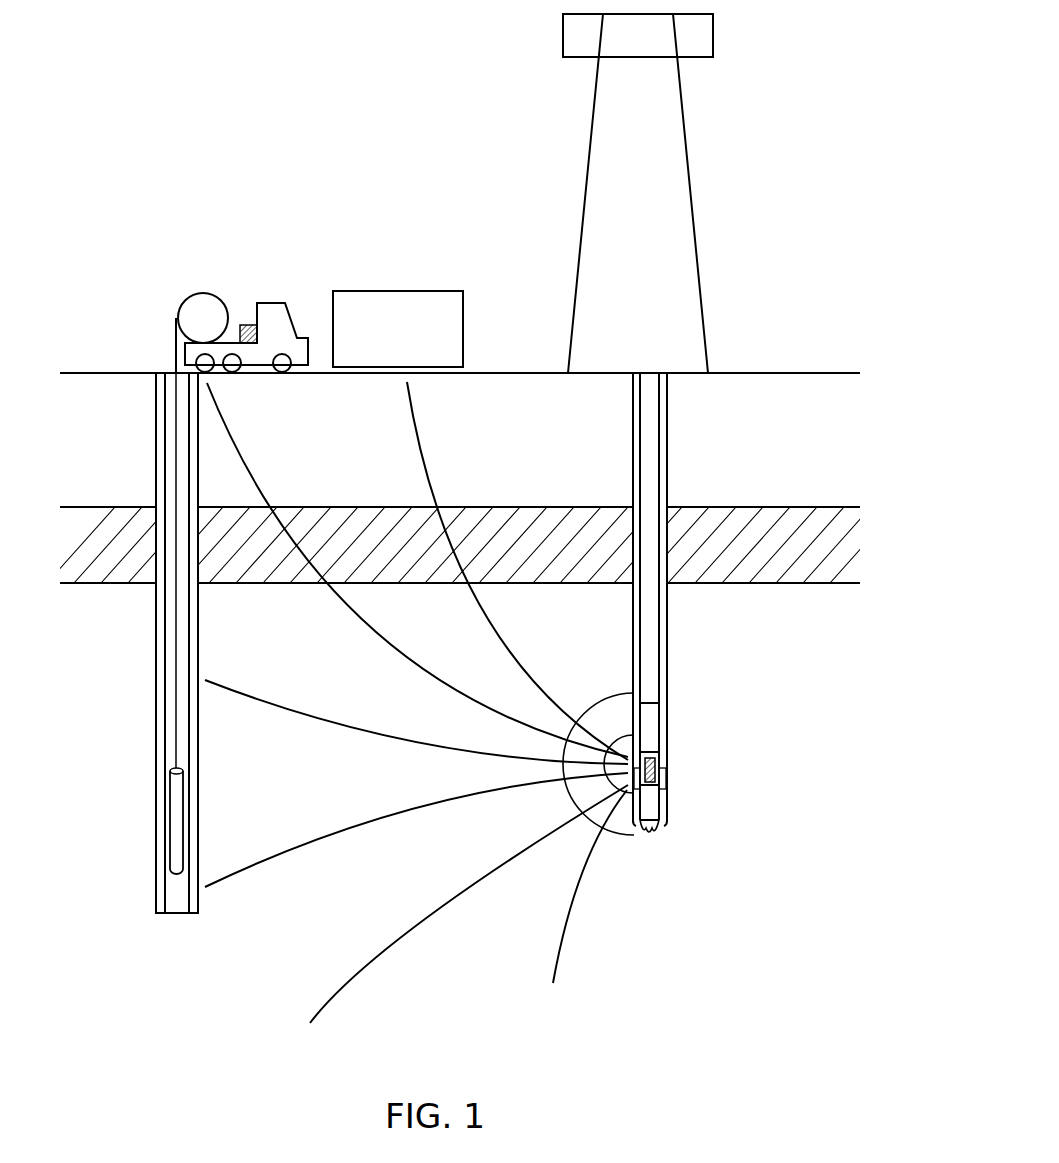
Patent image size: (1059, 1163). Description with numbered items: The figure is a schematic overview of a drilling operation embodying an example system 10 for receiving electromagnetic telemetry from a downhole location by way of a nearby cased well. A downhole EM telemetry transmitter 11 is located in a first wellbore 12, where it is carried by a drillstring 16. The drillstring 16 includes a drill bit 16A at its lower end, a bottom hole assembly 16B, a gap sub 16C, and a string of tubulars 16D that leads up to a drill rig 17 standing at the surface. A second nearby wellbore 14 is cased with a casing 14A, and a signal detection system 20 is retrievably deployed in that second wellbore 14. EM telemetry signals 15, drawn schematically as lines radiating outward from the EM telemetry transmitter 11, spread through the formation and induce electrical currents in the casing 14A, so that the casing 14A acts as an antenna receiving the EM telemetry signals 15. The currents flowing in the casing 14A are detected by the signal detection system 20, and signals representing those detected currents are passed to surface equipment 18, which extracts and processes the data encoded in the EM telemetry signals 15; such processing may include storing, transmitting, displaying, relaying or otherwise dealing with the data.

The system 10 is at (156, 170).
The EM telemetry transmitter 11 is at (657, 770).
The first wellbore 12 is at (667, 425).
The second nearby wellbore 14 is at (200, 440).
The casing 14A is at (200, 615).
The EM telemetry signals 15 is at (282, 710).
The drillstring 16 is at (693, 629).
The drill bit 16A is at (652, 836).
The bottom hole assembly 16B is at (652, 800).
The gap sub 16C is at (652, 756).
The string of tubulars 16D is at (652, 727).
The drill rig 17 is at (693, 215).
The surface equipment 18 is at (418, 291).
The signal detection system 20 is at (165, 342).